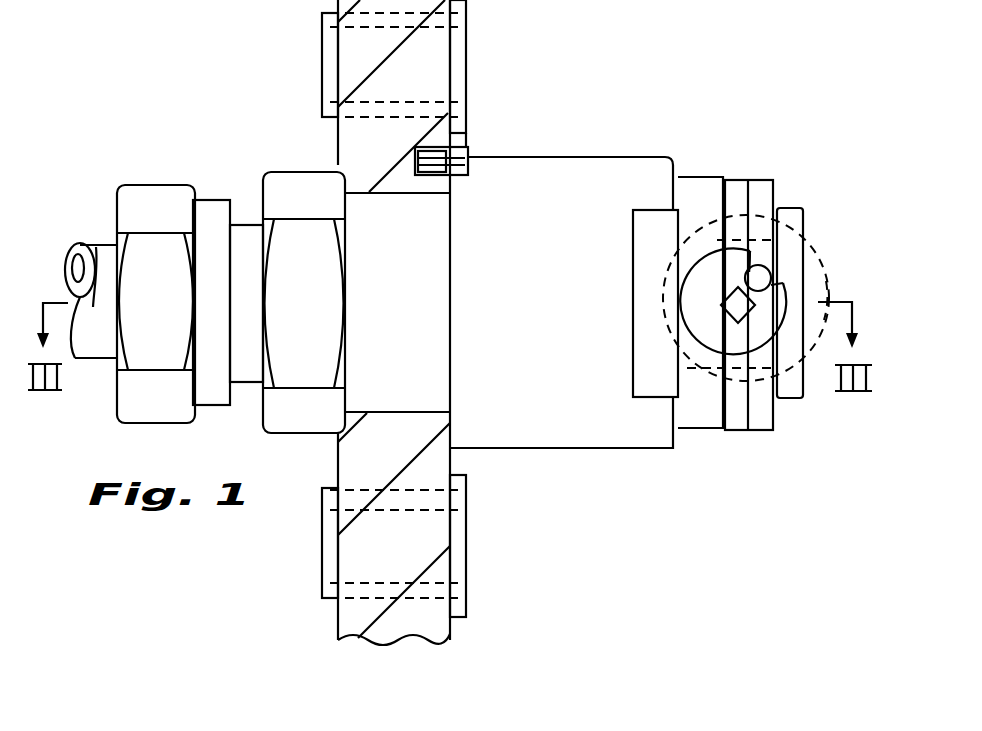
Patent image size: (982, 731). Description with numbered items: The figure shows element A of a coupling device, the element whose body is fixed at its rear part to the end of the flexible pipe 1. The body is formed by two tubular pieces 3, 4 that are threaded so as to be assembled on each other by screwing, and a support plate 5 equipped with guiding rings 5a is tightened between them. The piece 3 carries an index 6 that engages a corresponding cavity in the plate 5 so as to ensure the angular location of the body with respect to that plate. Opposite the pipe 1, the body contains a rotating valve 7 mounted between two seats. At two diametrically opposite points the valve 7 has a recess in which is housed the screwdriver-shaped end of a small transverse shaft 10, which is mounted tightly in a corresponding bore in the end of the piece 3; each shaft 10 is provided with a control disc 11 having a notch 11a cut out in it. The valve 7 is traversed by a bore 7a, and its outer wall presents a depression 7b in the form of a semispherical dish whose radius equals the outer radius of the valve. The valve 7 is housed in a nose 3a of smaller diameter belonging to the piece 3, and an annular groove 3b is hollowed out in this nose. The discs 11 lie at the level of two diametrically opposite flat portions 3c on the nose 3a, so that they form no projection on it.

The flexible pipe 1 is at (96, 257).
The tubular piece 3 is at (572, 187).
The nose 3a is at (698, 417).
The annular groove 3b is at (737, 176).
The flat portion 3c is at (655, 369).
The tubular piece 4 is at (320, 243).
The support plate 5 is at (405, 625).
The guiding ring 5a is at (460, 48).
The index 6 is at (468, 152).
The rotating valve 7 is at (662, 307).
The bore 7a is at (698, 227).
The depression 7b is at (808, 288).
The transverse shaft 10 is at (722, 307).
The control disc 11 is at (692, 283).
The notch 11a is at (762, 270).
The element A is at (667, 135).